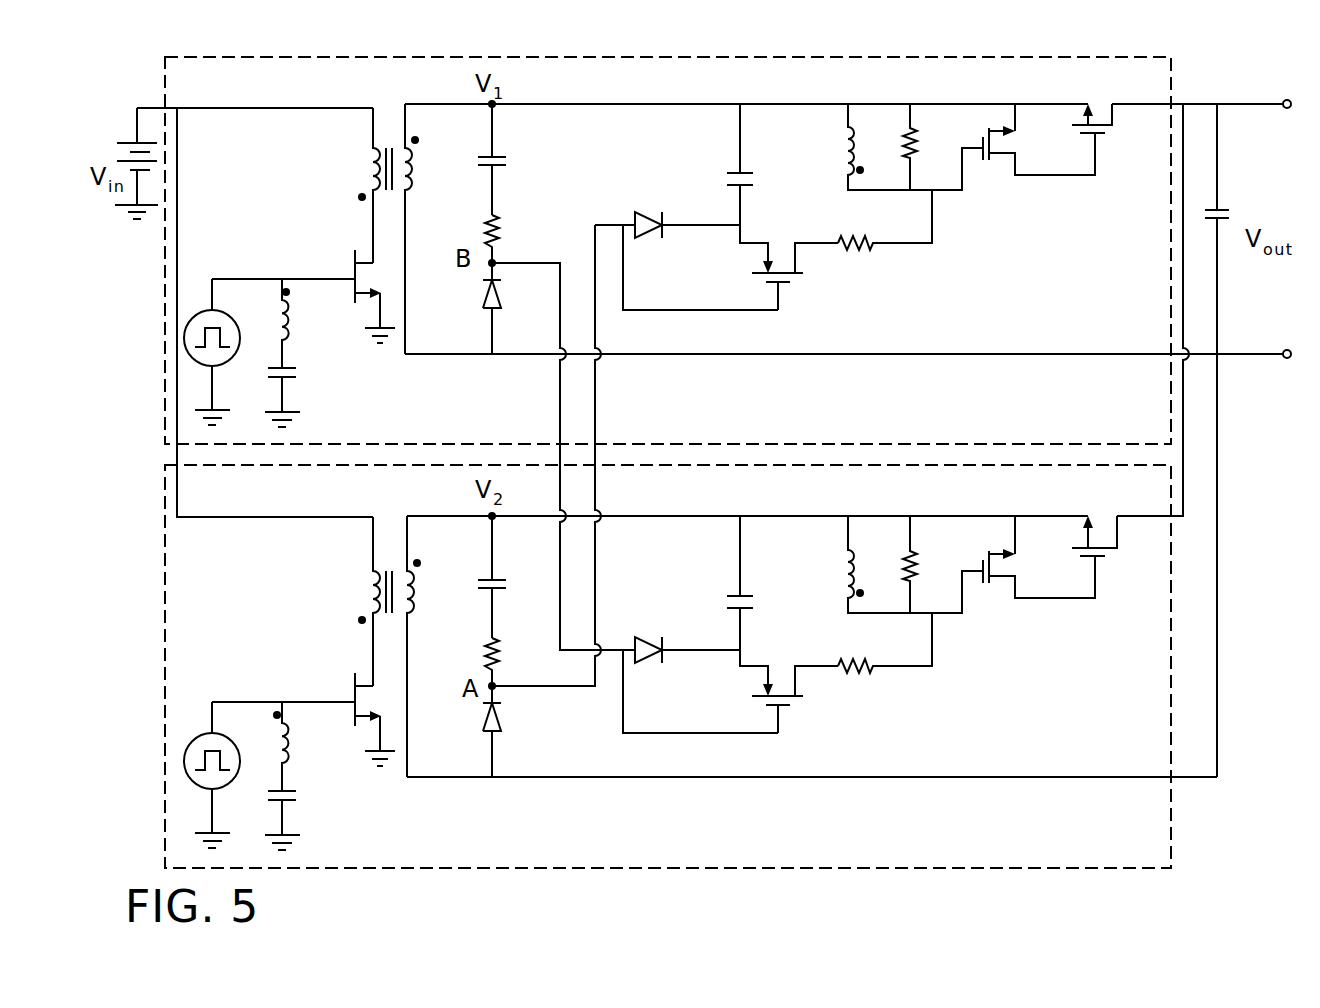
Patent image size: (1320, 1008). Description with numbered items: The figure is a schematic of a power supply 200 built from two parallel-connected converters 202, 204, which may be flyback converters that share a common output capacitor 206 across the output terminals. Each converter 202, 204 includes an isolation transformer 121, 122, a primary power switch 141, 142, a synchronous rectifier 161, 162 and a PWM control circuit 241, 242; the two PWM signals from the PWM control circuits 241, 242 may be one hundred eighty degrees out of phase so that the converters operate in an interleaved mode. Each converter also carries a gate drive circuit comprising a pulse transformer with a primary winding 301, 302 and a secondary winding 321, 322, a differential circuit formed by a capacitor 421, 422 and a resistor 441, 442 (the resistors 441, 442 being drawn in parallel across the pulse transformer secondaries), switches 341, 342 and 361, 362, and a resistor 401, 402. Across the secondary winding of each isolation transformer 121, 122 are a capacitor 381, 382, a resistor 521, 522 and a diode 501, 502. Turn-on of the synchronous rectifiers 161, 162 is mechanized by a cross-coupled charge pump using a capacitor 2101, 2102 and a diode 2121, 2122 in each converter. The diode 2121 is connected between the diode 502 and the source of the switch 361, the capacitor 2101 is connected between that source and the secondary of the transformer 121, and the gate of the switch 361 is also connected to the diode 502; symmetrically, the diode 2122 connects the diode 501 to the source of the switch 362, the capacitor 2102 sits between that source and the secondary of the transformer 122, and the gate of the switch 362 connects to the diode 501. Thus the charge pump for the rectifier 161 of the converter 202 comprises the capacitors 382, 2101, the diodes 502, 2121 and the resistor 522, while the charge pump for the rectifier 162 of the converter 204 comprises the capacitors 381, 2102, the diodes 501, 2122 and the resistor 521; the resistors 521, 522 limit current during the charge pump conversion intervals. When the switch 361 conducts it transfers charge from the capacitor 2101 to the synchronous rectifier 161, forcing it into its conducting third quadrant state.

The isolation transformer 121 is at (370, 172).
The isolation transformer 122 is at (370, 595).
The primary power switch 141 is at (358, 250).
The primary power switch 142 is at (358, 673).
The synchronous rectifier 161 is at (1102, 133).
The synchronous rectifier 162 is at (1113, 556).
The PWM control circuit 241 is at (200, 311).
The PWM control circuit 242 is at (200, 734).
The primary winding 301 is at (292, 338).
The primary winding 302 is at (296, 761).
The secondary winding 321 is at (845, 157).
The secondary winding 322 is at (845, 580).
The switch 341 is at (1000, 140).
The switch 342 is at (1000, 563).
The switch 361 is at (786, 287).
The switch 362 is at (786, 710).
The capacitor 381 is at (512, 157).
The capacitor 382 is at (508, 582).
The resistor 401 is at (872, 248).
The resistor 402 is at (872, 671).
The capacitor 421 is at (299, 375).
The capacitor 422 is at (299, 798).
The resistor 441 is at (918, 150).
The resistor 442 is at (918, 573).
The diode 501 is at (490, 289).
The diode 502 is at (490, 712).
The resistor 521 is at (499, 236).
The resistor 522 is at (492, 648).
The capacitor 2101 is at (736, 170).
The capacitor 2102 is at (736, 593).
The diode 2121 is at (650, 235).
The diode 2122 is at (650, 658).
The power supply 200 is at (1158, 890).
The converter 202 is at (1172, 82).
The converter 204 is at (1177, 836).
The output capacitor 206 is at (1222, 207).